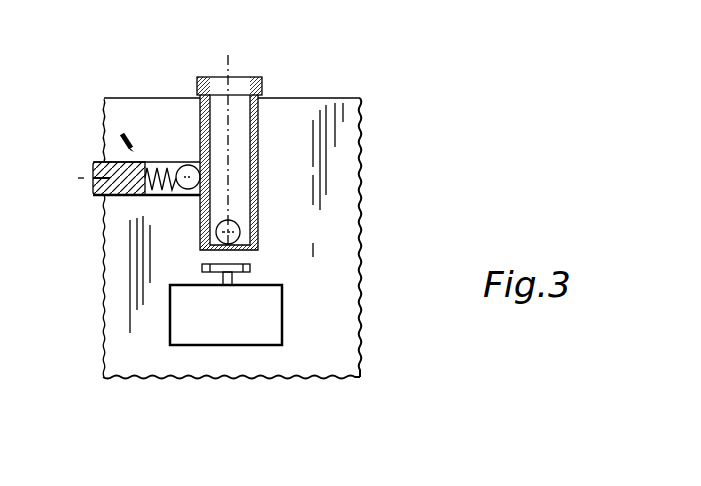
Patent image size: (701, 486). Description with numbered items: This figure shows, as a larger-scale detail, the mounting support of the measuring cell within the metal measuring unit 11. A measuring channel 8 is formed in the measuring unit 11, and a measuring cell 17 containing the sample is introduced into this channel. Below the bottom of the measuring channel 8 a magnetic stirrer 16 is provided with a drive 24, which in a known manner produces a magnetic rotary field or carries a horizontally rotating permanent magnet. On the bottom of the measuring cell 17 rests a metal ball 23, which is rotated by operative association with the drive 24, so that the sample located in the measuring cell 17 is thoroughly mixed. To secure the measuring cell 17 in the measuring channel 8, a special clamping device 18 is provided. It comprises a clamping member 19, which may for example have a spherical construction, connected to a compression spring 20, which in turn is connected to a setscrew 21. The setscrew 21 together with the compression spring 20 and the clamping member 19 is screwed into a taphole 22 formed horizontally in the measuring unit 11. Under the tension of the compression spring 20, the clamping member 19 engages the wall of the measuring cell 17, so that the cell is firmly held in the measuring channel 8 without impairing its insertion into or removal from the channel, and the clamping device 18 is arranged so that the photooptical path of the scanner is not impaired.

The measuring channel 8 is at (267, 168).
The measuring unit 11 is at (347, 107).
The magnetic stirrer 16 is at (148, 289).
The measuring cell 17 is at (250, 77).
The clamping device 18 is at (122, 133).
The clamping member 19 is at (187, 163).
The compression spring 20 is at (165, 167).
The setscrew 21 is at (97, 162).
The taphole 22 is at (122, 194).
The metal ball 23 is at (238, 239).
The drive 24 is at (252, 268).